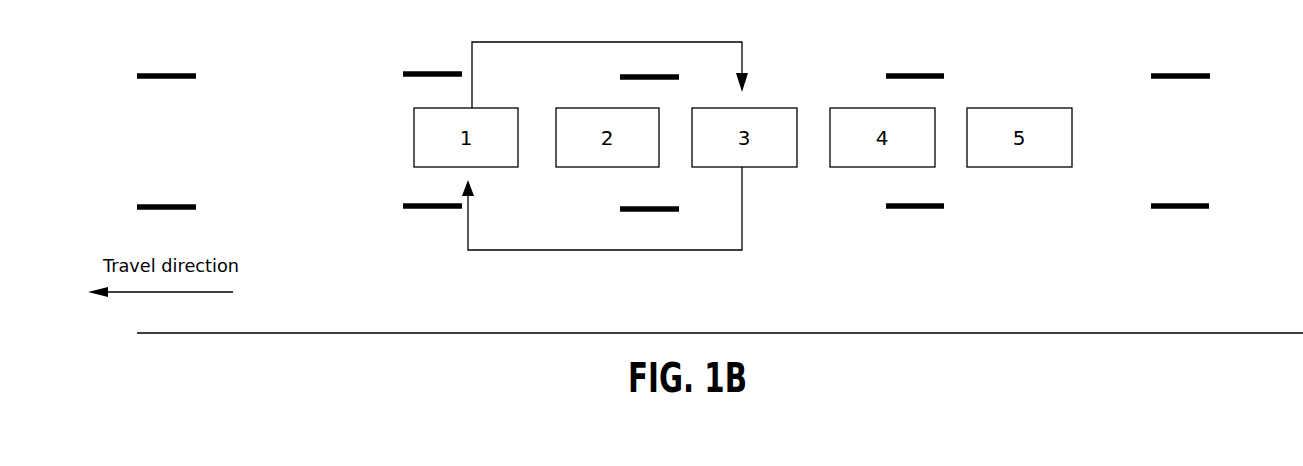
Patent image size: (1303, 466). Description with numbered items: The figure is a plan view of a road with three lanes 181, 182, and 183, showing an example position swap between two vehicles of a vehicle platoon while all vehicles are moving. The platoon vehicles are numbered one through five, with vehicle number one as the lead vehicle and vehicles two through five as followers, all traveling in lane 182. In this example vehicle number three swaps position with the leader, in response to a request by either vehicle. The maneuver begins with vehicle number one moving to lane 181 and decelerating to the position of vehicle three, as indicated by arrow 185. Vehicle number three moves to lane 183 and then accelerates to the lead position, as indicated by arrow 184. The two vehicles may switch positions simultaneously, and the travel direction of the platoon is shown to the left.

The lane 181 is at (1169, 46).
The lane 182 is at (1169, 144).
The lane 183 is at (1169, 276).
The arrow 184 is at (556, 250).
The arrow 185 is at (543, 42).